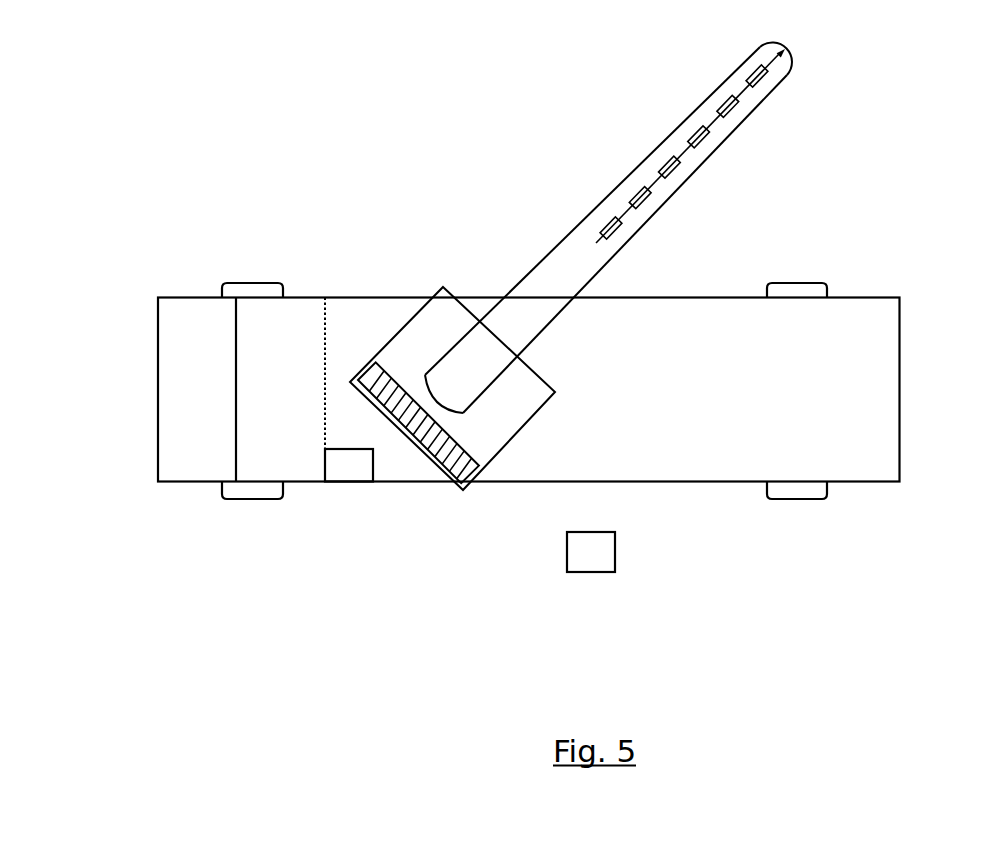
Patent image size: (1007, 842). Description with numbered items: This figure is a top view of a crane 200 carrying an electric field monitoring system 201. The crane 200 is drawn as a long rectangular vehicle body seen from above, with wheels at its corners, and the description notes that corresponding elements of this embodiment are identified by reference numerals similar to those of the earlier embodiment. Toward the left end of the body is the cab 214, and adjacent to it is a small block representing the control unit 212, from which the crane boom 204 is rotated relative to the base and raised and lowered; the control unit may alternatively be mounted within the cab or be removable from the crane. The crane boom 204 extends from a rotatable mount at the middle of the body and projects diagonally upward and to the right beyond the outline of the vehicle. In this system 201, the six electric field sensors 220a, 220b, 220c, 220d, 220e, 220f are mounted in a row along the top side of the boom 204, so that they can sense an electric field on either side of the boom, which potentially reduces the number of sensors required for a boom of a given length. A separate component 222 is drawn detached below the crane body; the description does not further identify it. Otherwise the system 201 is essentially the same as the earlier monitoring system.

The crane 200 is at (187, 271).
The electric field monitoring system 201 is at (892, 163).
The crane boom 204 is at (501, 266).
The control unit 212 is at (350, 470).
The cab 214 is at (295, 318).
The electric field sensor 220a is at (618, 230).
The electric field sensor 220b is at (647, 199).
The electric field sensor 220c is at (676, 169).
The electric field sensor 220d is at (705, 139).
The electric field sensor 220e is at (735, 109).
The electric field sensor 220f is at (765, 80).
The remote unit 222 is at (590, 550).